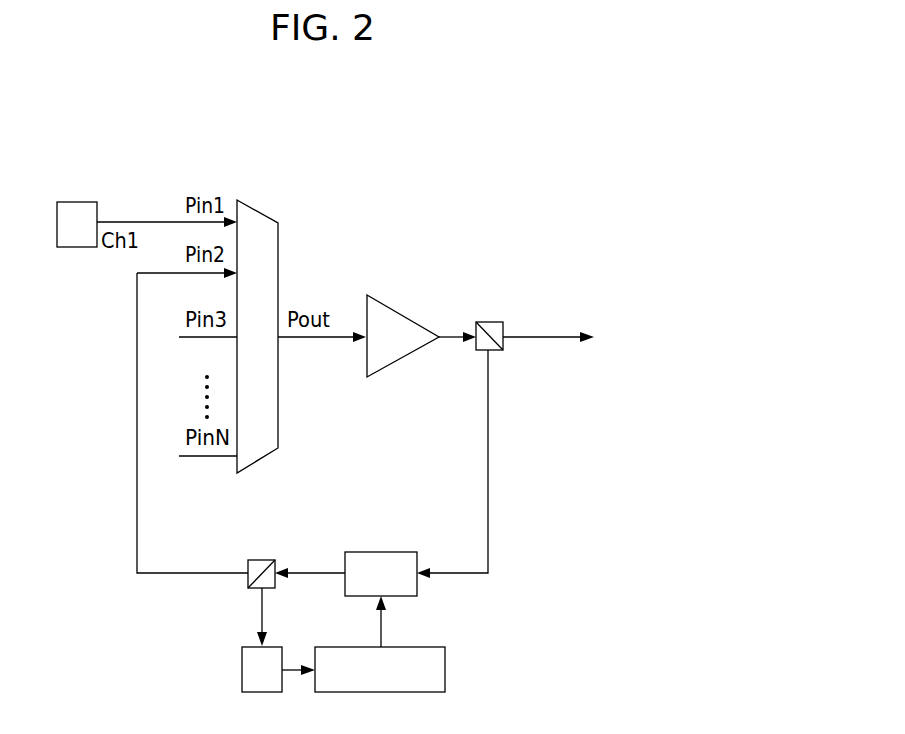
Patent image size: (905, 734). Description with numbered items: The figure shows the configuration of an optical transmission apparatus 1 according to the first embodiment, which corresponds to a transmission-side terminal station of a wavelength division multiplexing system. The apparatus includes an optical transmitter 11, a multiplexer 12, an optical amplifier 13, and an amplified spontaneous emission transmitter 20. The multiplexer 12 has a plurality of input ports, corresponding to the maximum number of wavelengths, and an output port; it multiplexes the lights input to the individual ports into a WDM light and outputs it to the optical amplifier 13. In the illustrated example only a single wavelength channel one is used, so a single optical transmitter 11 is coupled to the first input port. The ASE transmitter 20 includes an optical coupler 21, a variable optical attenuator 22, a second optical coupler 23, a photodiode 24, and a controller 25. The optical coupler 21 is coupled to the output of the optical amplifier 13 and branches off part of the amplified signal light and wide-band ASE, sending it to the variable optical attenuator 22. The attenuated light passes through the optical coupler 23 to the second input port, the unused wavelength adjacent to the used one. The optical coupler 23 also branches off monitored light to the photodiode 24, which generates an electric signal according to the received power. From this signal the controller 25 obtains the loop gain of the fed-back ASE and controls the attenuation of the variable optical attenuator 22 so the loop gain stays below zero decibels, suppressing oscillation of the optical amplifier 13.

The optical transmission apparatus 1 is at (60, 126).
The optical transmitter 11 is at (73, 201).
The multiplexer 12 is at (257, 206).
The optical amplifier 13 is at (394, 309).
The ASE transmitter 20 is at (542, 653).
The optical coupler 21 is at (490, 321).
The variable optical attenuator 22 is at (383, 551).
The optical coupler 23 is at (260, 559).
The photodiode 24 is at (242, 670).
The controller 25 is at (445, 670).